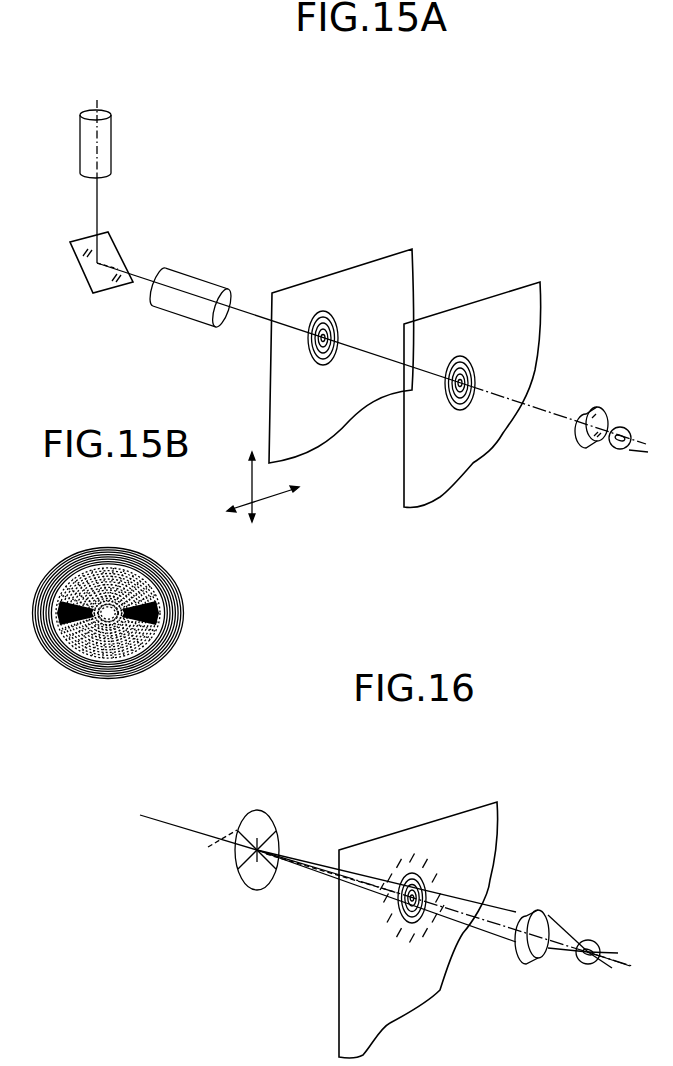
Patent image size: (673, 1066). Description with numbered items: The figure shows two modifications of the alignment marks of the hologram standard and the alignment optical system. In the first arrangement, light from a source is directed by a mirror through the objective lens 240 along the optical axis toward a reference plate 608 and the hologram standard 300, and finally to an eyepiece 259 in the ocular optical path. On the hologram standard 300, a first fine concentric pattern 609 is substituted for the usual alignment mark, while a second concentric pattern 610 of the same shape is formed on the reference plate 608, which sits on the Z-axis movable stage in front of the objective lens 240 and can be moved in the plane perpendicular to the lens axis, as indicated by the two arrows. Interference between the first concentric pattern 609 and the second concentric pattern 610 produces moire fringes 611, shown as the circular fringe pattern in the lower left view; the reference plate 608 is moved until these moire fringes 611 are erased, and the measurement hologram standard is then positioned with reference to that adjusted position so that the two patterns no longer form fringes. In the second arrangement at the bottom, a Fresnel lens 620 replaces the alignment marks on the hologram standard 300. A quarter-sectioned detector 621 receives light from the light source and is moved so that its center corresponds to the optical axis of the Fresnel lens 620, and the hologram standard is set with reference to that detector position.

In FIG. 15A, the eyepiece 259 is at (103, 152).
In FIG. 15A, the objective lens 240 is at (200, 287).
In FIG. 15A, the reference plate 608 is at (393, 262).
In FIG. 15A, the second concentric pattern 610 is at (338, 319).
In FIG. 15A, the hologram standard 300 is at (522, 295).
In FIG. 16, the hologram standard 300 is at (468, 818).
In FIG. 15A, the first fine concentric pattern 609 is at (472, 358).
In FIG. 15B, the moire fringes 611 is at (92, 551).
In FIG. 16, the quarter-sectioned detector 621 is at (265, 823).
In FIG. 16, the Fresnel lens 620 is at (415, 927).